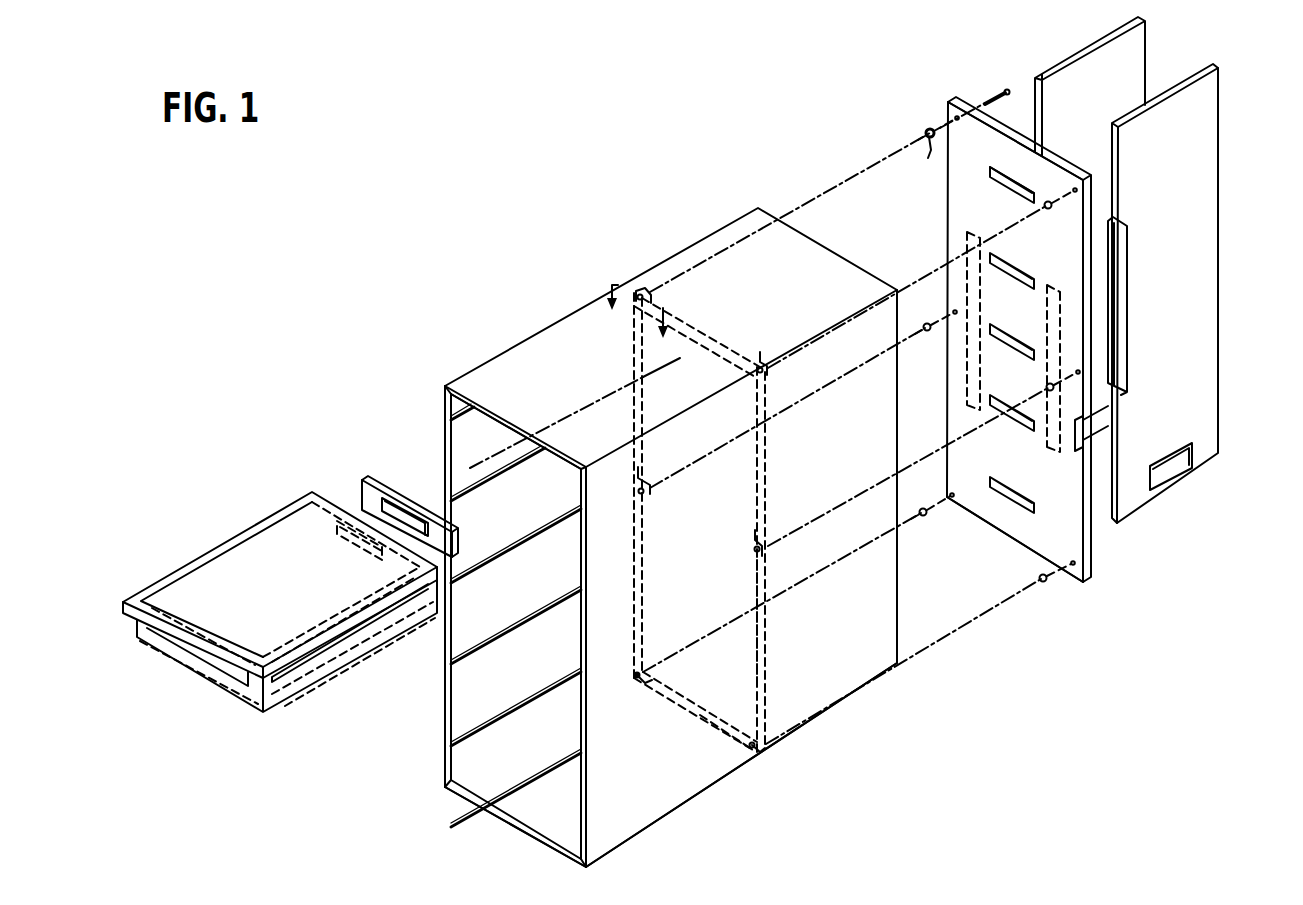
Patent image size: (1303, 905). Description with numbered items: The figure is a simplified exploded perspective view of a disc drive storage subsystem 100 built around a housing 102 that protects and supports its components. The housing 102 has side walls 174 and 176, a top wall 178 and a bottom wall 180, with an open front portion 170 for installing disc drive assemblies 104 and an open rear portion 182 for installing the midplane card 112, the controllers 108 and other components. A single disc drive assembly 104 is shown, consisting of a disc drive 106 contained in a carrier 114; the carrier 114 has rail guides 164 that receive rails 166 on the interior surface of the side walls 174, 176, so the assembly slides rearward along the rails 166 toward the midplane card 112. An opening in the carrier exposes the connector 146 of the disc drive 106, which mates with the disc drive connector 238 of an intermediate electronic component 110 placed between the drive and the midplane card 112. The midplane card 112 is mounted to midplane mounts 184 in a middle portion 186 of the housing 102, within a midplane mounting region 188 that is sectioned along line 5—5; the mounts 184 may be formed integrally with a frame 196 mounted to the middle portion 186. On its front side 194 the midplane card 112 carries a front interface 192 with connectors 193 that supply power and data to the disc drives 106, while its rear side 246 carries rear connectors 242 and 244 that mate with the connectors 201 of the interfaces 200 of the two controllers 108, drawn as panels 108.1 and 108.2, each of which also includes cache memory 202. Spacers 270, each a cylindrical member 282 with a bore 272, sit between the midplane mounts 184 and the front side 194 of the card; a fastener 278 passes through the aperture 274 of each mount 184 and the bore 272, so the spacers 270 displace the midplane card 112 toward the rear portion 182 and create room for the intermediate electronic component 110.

The disc drive storage subsystem 100 is at (540, 172).
The housing 102 is at (543, 335).
The disc drive assembly 104 is at (290, 560).
The disc drive 106 is at (228, 553).
The controller 108 is at (1154, 272).
The inner door panel 108.1 is at (1057, 65).
The outer door panel 108.2 is at (1205, 296).
The intermediate electronic component 110 is at (381, 462).
The midplane card 112 is at (1030, 343).
The disc drive carrier 114 is at (248, 700).
The connector 146 is at (343, 522).
The rail guide 164 is at (300, 674).
The rail 166 is at (447, 415).
The front portion 170 is at (607, 815).
The side wall 174 is at (443, 450).
The side wall 176 is at (668, 797).
The top wall 178 is at (478, 392).
The bottom wall 180 is at (508, 815).
The rear portion 182 is at (752, 208).
The midplane mount 184 is at (638, 288).
The middle portion 186 is at (770, 620).
The midplane mounting region 188 is at (650, 283).
The front interface 192 is at (990, 185).
The connector 193 is at (992, 170).
The front side 194 is at (1030, 535).
The frame 196 is at (768, 668).
The interface 200 is at (1128, 288).
The connector 201 is at (1132, 355).
The cache memory 202 is at (1185, 475).
The disc drive connector 238 is at (388, 498).
The rear connector 242 is at (962, 392).
The rear connector 244 is at (1058, 272).
The rear side 246 is at (1030, 128).
The spacer 270 is at (926, 129).
The bore 272 is at (932, 140).
The aperture 274 is at (655, 298).
The fastener 278 is at (1004, 91).
The cylindrical member 282 is at (924, 133).
The section line 5- 5 is at (637, 328).